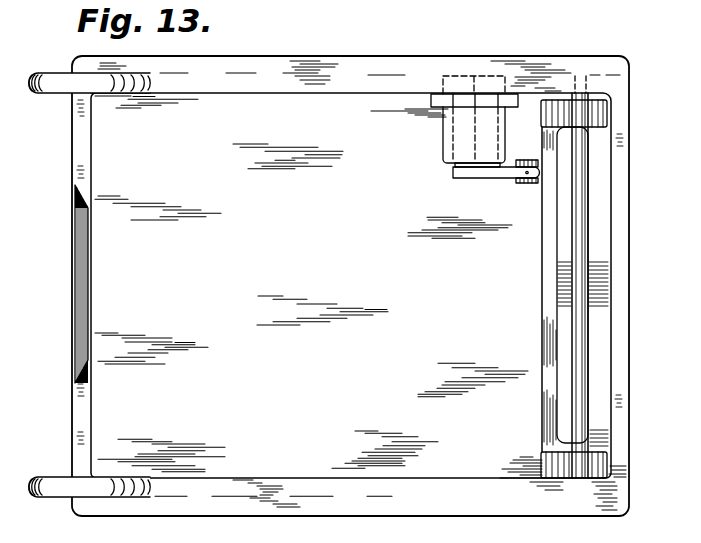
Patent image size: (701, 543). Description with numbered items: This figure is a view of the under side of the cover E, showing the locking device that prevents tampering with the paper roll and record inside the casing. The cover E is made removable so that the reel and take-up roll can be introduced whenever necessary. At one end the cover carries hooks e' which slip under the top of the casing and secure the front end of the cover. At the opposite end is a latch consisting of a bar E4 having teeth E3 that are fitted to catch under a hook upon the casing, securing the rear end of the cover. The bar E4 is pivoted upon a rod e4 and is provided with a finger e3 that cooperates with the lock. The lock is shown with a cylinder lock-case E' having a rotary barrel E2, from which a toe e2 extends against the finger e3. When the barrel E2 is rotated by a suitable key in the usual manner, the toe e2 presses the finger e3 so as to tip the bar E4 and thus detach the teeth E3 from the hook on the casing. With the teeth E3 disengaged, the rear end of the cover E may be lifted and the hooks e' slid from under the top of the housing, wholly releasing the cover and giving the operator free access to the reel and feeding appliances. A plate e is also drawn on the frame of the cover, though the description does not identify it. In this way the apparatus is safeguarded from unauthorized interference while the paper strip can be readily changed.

The cover E is at (350, 286).
The cylinder lock-case E' is at (462, 121).
The rotary barrel E2 is at (455, 170).
The teeth E3 is at (598, 112).
The bar E4 is at (542, 279).
The clip plate e is at (60, 284).
The hooks e' is at (89, 285).
The toe e2 is at (527, 174).
The finger e3 is at (535, 184).
The rod e4 is at (582, 277).